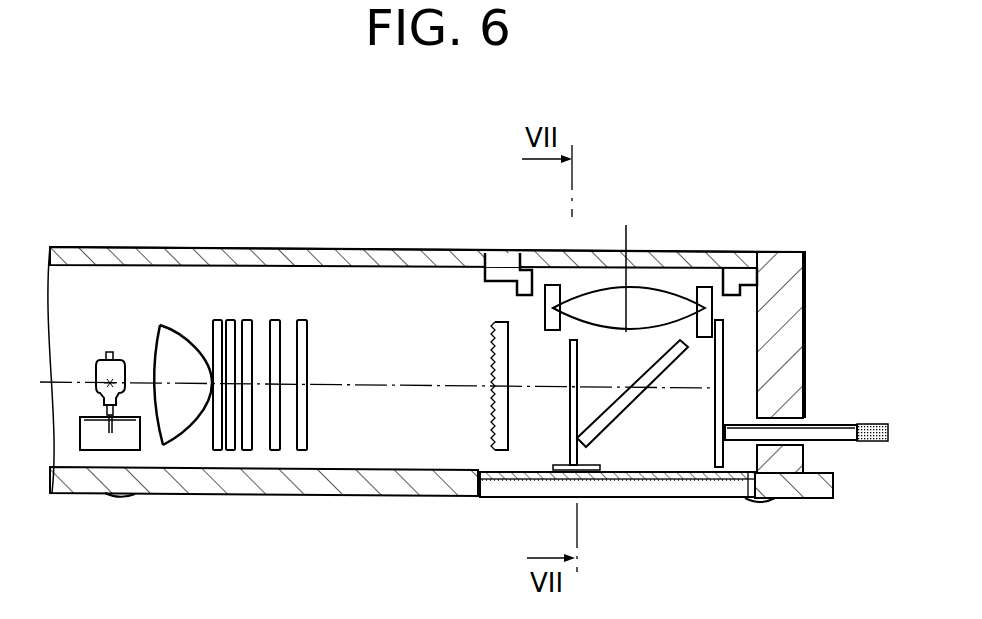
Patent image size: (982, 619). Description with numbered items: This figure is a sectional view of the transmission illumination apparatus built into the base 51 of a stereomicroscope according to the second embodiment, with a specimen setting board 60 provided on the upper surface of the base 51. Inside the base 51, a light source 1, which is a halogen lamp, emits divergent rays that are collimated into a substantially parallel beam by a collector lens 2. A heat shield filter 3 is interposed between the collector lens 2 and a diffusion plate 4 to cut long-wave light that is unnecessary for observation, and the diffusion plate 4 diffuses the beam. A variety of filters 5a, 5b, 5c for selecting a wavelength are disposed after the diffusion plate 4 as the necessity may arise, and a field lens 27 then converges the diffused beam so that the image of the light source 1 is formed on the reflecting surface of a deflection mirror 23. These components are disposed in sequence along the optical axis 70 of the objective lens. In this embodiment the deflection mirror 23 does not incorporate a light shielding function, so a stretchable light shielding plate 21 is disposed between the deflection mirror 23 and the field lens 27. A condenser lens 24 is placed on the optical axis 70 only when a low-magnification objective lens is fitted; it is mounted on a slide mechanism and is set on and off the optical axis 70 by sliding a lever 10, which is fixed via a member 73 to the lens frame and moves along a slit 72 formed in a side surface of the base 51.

The light source 1 is at (108, 352).
The collector lens 2 is at (157, 330).
The heat shield filter 3 is at (218, 320).
The diffusion plate 4 is at (230, 320).
The filter 5a is at (307, 313).
The filter 5b is at (275, 385).
The filter 5c is at (302, 385).
The base 51 is at (399, 258).
The field lens 27 is at (500, 322).
The optical axis 70 is at (397, 382).
The specimen setting board 60 is at (733, 252).
The condenser lens 24 is at (700, 306).
The deflection mirror 23 is at (700, 360).
The member 73 is at (722, 392).
The lever 10 is at (872, 444).
The slit 72 is at (807, 447).
The light shielding plate 21 is at (578, 446).